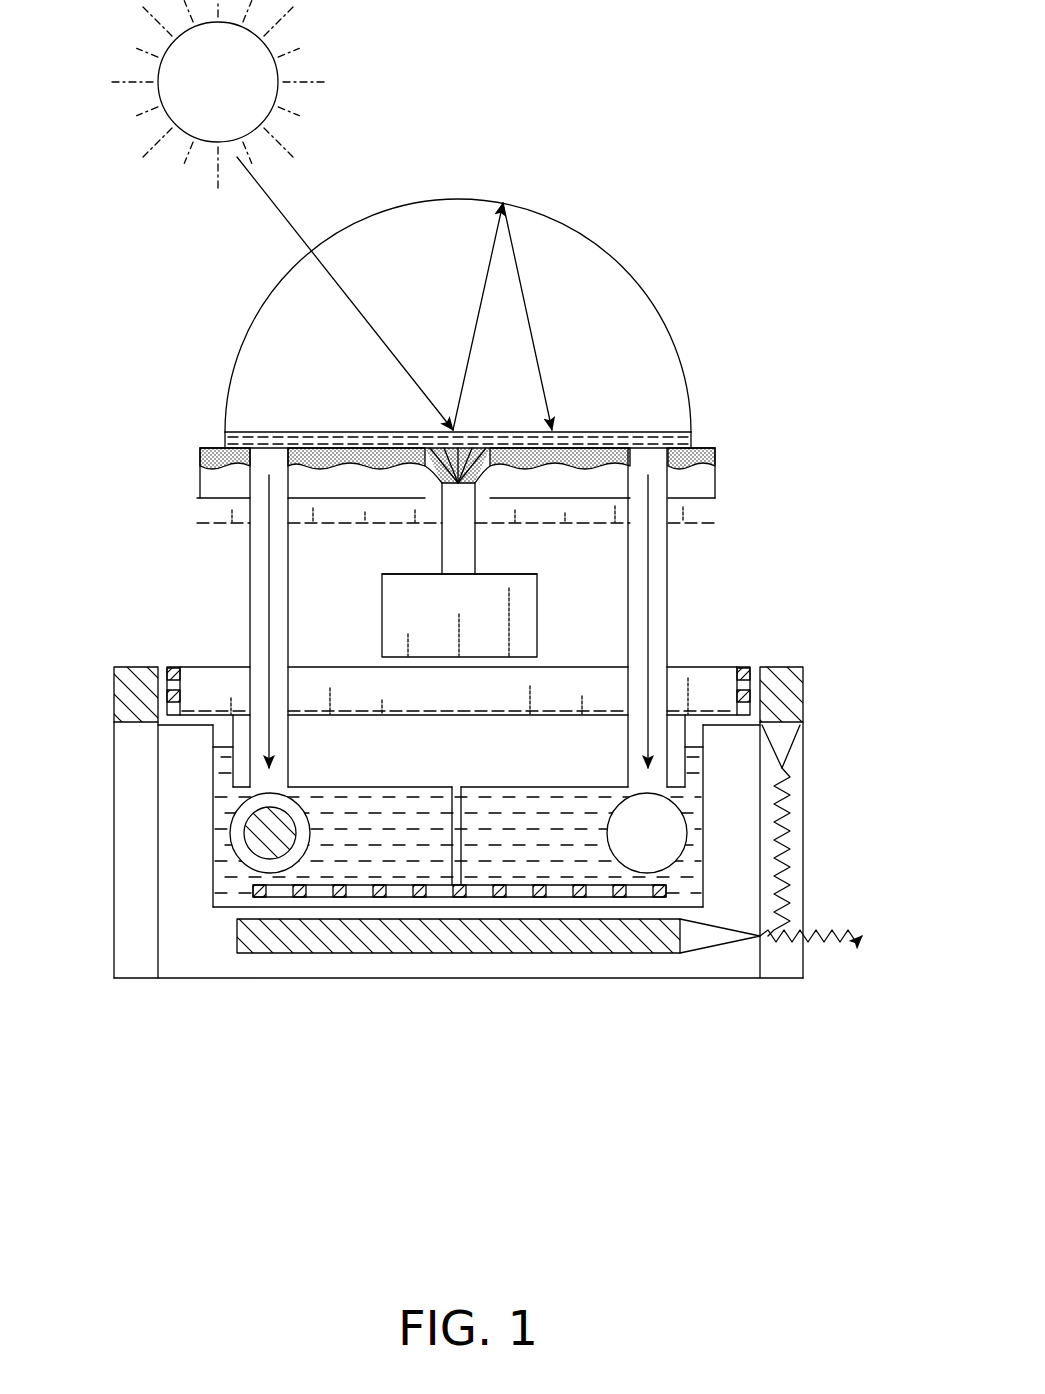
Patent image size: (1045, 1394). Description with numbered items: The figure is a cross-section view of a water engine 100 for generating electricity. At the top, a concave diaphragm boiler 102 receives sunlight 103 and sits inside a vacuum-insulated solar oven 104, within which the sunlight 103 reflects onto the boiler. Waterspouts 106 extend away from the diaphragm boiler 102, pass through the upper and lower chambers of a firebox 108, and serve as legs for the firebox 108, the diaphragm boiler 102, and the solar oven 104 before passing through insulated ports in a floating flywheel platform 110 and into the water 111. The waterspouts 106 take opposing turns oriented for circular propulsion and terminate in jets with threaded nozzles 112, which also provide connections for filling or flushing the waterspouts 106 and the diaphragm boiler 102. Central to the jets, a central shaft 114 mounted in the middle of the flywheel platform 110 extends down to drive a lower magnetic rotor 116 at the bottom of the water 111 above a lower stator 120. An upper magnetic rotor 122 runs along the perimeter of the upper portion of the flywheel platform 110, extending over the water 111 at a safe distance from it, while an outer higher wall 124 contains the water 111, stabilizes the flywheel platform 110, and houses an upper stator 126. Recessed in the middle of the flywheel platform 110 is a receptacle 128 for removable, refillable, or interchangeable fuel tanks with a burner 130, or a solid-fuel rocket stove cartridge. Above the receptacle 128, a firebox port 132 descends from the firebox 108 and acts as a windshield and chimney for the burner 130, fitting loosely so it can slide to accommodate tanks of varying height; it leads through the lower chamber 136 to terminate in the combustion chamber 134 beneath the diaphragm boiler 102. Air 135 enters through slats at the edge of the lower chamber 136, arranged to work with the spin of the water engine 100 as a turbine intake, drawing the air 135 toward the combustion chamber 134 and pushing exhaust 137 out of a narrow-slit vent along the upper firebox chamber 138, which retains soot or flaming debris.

The water engine 100 is at (860, 114).
The diaphragm boiler 102 is at (603, 435).
The sunlight 103 is at (290, 222).
The vacuum-insulated solar oven 104 is at (658, 307).
The waterspouts 106 is at (250, 596).
The firebox 108 is at (547, 524).
The floating flywheel platform 110 is at (682, 666).
The water 111 is at (552, 802).
The threaded nozzles 112 is at (290, 804).
The central shaft 114 is at (452, 788).
The lower magnetic rotor 116 is at (475, 883).
The lower stator 120 is at (500, 955).
The upper magnetic rotor 122 is at (170, 666).
The outer higher wall 124 is at (114, 770).
The upper stator 126 is at (114, 690).
The receptacle 128 is at (380, 652).
The burner 130 is at (380, 572).
The firebox port 132 is at (476, 566).
The combustion chamber 134 is at (412, 476).
The air 135 is at (182, 512).
The lower chamber 136 is at (196, 521).
The exhaust 137 is at (200, 457).
The upper firebox chamber 138 is at (198, 450).